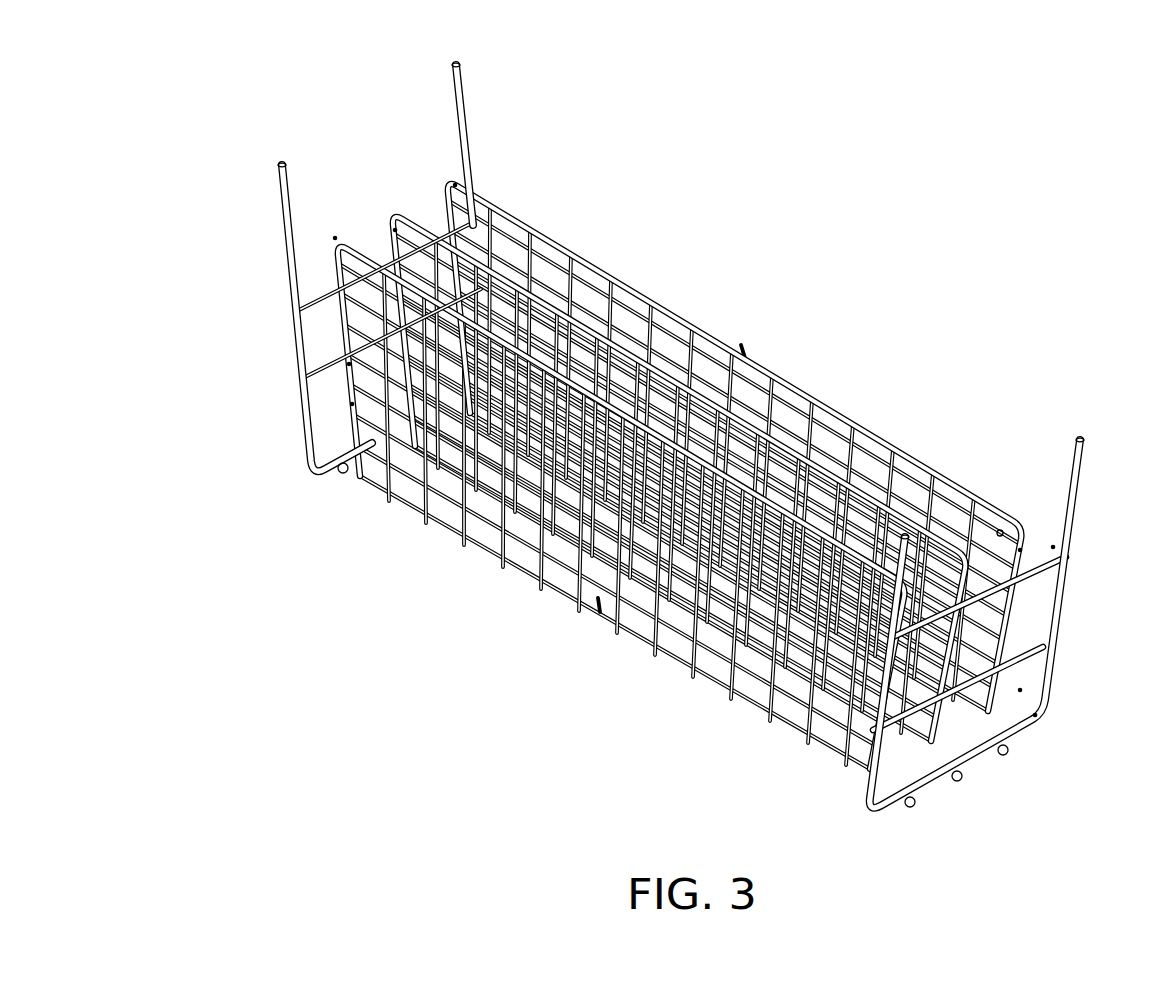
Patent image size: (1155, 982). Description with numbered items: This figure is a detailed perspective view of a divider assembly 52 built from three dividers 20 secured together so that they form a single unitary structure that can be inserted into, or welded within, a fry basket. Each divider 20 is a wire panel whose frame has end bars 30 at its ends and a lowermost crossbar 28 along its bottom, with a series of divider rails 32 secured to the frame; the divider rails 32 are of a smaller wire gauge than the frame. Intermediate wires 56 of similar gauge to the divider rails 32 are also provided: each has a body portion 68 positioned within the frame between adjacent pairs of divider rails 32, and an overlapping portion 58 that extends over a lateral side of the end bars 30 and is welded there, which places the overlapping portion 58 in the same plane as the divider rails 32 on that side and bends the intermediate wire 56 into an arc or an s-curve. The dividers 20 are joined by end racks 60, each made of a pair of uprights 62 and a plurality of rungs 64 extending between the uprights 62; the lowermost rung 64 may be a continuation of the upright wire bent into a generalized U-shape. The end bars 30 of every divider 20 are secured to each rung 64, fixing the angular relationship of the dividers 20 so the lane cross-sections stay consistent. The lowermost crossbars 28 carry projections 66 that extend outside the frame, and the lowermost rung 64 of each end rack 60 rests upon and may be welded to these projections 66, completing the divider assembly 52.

The divider 20 is at (671, 482).
The lowermost crossbar 28 is at (378, 478).
The end bar 30 is at (857, 773).
The divider rail 32 is at (558, 583).
The divider assembly 52 is at (667, 468).
The intermediate wire 56 is at (1000, 533).
The overlapping portion 58 is at (352, 404).
The end rack 60 is at (667, 468).
The upright 62 is at (867, 813).
The rung 64 is at (1033, 727).
The projection 66 is at (1002, 752).
The body portion 68 is at (600, 600).